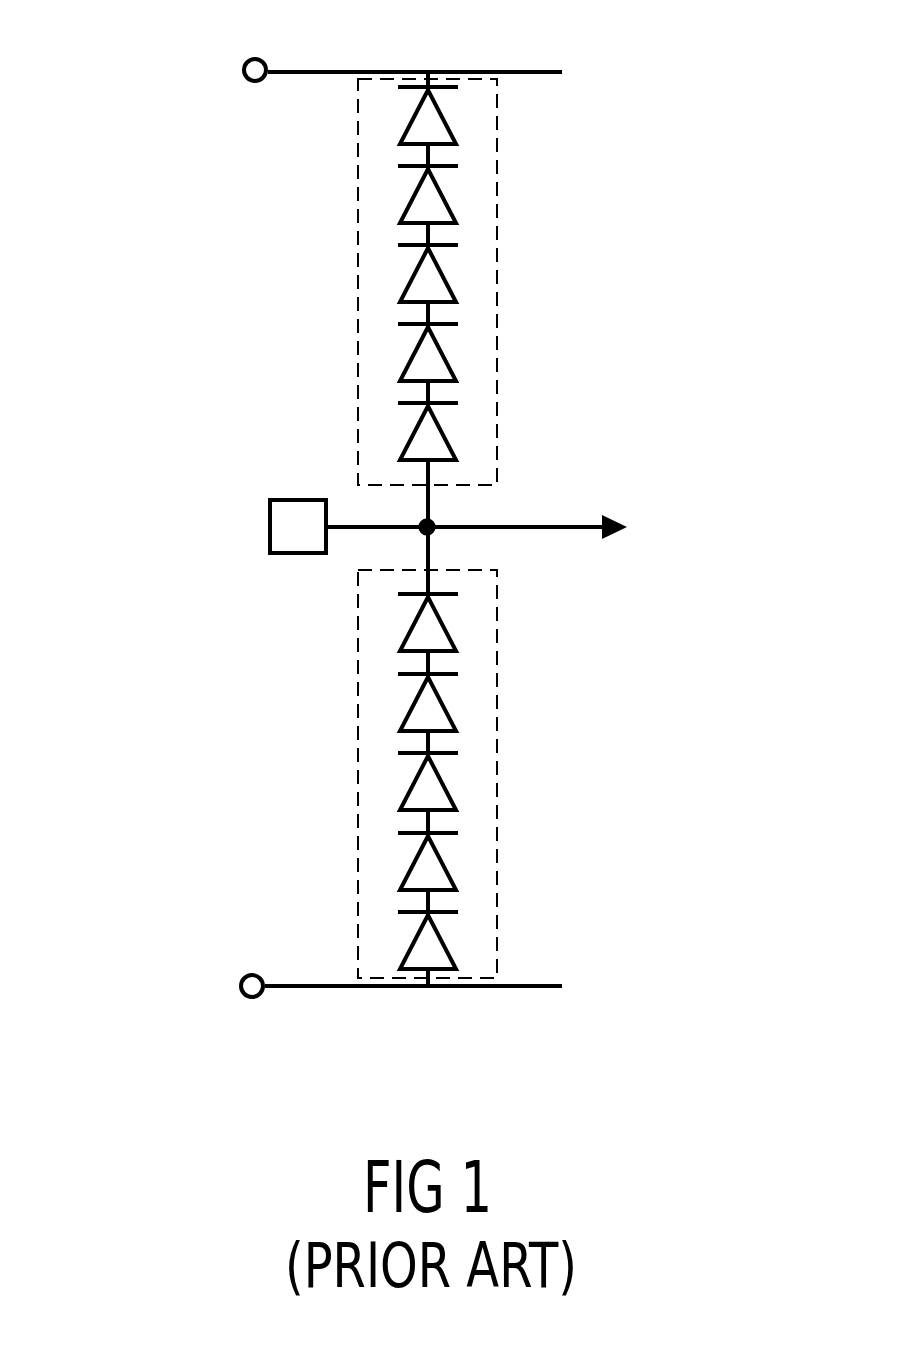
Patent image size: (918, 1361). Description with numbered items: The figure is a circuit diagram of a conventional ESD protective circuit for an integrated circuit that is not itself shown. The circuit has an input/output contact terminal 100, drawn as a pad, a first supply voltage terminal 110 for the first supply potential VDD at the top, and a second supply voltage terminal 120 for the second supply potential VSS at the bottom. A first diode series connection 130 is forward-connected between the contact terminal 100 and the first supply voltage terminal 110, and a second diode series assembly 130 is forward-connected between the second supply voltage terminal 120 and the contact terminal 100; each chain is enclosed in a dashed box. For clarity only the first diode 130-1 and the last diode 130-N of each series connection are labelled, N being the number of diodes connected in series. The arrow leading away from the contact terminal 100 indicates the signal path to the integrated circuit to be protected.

The input/output contact terminal 100 is at (268, 528).
The first supply voltage terminal 110 is at (243, 71).
The second supply voltage terminal 120 is at (240, 986).
The diode series connection 130 is at (357, 295).
The first diode 130-1 is at (445, 122).
The last diode 130-N is at (445, 440).